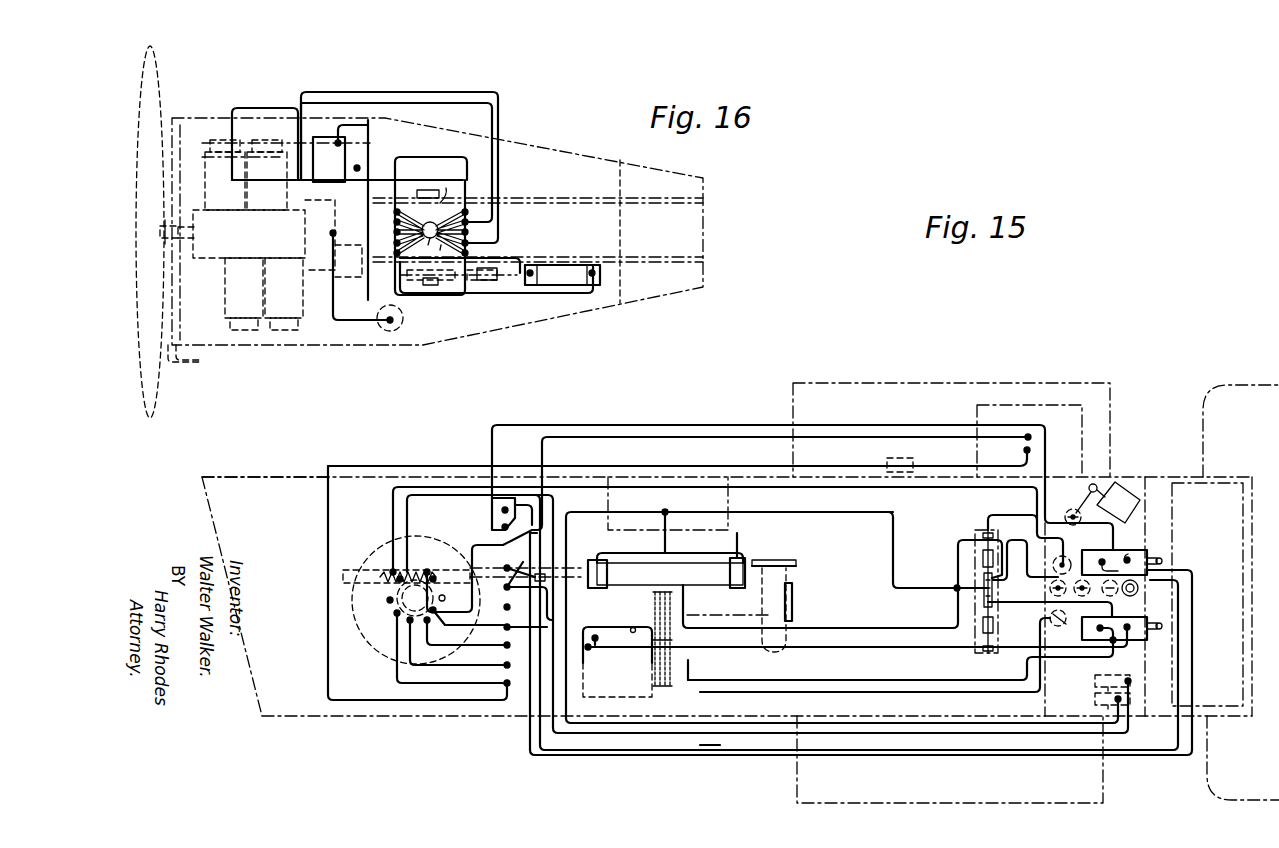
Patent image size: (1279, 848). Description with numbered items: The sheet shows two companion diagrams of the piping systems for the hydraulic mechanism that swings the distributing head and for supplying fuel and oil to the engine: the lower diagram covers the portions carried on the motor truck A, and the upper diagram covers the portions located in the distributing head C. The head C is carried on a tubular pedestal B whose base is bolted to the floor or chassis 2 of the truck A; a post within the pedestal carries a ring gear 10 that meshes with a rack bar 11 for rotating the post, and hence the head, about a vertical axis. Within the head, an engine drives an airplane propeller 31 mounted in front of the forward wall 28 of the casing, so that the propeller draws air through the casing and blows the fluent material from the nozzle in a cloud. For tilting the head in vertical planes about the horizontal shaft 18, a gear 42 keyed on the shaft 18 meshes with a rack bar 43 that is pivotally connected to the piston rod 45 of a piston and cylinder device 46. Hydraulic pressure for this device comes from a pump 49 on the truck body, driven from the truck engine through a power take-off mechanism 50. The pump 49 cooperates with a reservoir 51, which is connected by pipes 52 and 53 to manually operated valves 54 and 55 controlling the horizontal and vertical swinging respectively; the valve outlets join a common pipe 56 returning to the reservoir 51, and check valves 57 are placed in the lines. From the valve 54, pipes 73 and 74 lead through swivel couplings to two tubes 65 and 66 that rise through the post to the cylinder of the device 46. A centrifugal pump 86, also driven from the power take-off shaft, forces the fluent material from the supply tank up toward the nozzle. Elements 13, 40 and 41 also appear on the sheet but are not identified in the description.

In FIG. 15, the floor or chassis 2 is at (304, 482).
In FIG. 15, the ring gear 10 is at (610, 555).
In FIG. 15, the rack bar 11 is at (457, 567).
In FIG. 16, the distributor cap 13 is at (446, 200).
In FIG. 16, the horizontal shaft 18 is at (432, 248).
In FIG. 16, the forward wall 28 is at (192, 362).
In FIG. 16, the airplane propeller 31 is at (168, 396).
In FIG. 15, the condenser box 40 is at (660, 530).
In FIG. 15, the coil terminal 41 is at (740, 530).
In FIG. 16, the gear 42 is at (440, 290).
In FIG. 16, the rack bar 43 is at (470, 282).
In FIG. 16, the piston rod 45 is at (487, 282).
In FIG. 16, the piston and cylinder device 46 is at (570, 285).
In FIG. 15, the pump 49 is at (612, 698).
In FIG. 15, the power take-off mechanism 50 is at (688, 640).
In FIG. 15, the reservoir 51 is at (633, 628).
In FIG. 15, the pipe 52 is at (850, 647).
In FIG. 15, the pipe 53 is at (830, 622).
In FIG. 15, the valve or controller 54 is at (1128, 552).
In FIG. 15, the valve or controller 55 is at (1140, 614).
In FIG. 15, the common pipe 56 is at (893, 560).
In FIG. 15, the check valves 57 is at (988, 530).
In FIG. 16, the tube 65 is at (440, 255).
In FIG. 15, the tube 65 is at (440, 645).
In FIG. 16, the tube 66 is at (430, 243).
In FIG. 15, the tube 66 is at (397, 627).
In FIG. 15, the pipe 73 is at (726, 750).
In FIG. 15, the pipe 74 is at (766, 755).
In FIG. 15, the centrifugal pump 86 is at (796, 570).
In FIG. 15, the motor truck A is at (330, 722).
In FIG. 15, the pedestal B is at (393, 607).
In FIG. 16, the distributing head C is at (306, 350).